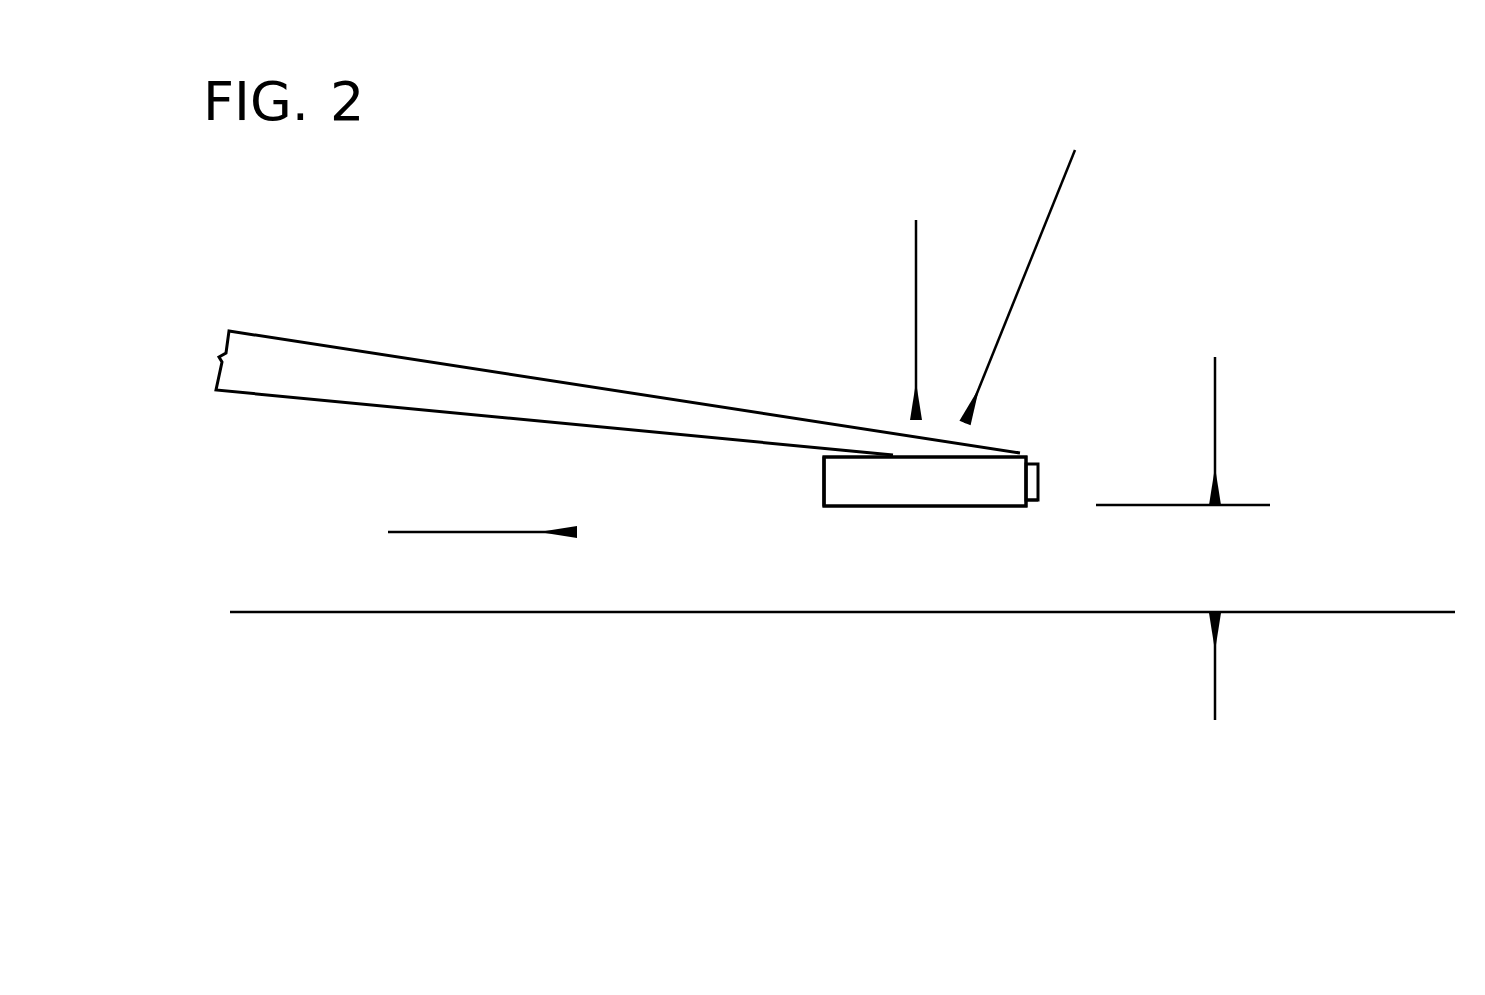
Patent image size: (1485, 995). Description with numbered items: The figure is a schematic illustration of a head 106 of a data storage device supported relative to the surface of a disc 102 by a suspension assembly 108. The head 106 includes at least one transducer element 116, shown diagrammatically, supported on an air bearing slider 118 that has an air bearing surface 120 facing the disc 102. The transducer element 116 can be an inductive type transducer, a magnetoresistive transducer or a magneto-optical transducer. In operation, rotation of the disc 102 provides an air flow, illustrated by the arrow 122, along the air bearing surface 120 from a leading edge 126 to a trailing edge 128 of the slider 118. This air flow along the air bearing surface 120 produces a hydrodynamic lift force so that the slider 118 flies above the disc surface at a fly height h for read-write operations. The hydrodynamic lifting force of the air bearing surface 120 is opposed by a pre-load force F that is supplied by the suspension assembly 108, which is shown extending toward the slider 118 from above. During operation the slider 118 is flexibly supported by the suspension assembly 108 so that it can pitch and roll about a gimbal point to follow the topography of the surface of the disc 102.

The disc 102 is at (1298, 612).
The head 106 is at (1039, 267).
The suspension assembly 108 is at (583, 383).
The transducer element 116 is at (1034, 466).
The air bearing slider 118 is at (985, 478).
The air bearing surface 120 is at (886, 506).
The arrow 122 is at (465, 530).
The leading edge 126 is at (824, 480).
The trailing edge 128 is at (1030, 490).
The pre-load force F is at (916, 300).
The fly height h is at (1215, 430).